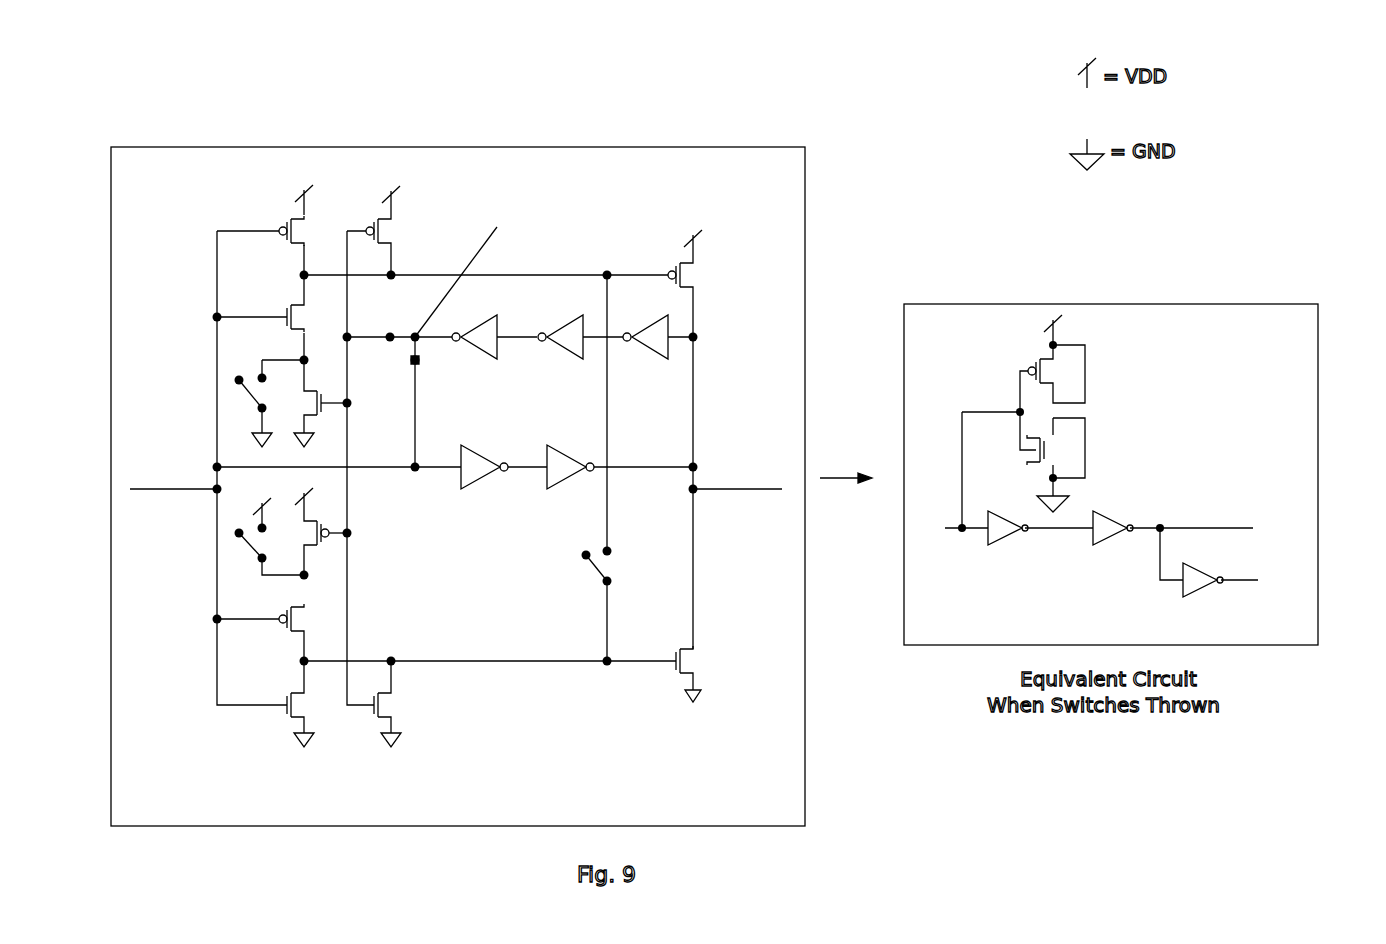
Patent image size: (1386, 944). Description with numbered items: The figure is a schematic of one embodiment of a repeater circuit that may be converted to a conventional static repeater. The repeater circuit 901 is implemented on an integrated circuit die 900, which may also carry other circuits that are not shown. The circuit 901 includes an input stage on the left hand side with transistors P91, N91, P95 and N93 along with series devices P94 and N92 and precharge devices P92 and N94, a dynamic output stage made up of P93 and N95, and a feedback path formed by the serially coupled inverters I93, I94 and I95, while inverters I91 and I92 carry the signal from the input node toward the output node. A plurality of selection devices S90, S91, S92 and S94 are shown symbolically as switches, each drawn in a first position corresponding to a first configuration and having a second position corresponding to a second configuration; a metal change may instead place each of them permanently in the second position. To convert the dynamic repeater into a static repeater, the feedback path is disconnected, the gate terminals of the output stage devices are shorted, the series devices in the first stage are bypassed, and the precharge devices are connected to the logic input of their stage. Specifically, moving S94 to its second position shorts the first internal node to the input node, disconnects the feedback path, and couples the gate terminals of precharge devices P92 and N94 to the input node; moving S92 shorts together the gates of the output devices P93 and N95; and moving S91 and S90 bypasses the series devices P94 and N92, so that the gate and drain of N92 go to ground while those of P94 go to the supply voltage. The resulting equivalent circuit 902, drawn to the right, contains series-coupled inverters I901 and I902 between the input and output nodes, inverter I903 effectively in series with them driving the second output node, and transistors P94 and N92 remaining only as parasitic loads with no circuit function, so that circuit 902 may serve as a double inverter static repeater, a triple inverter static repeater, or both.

The integrated circuit die 900 is at (557, 147).
The repeater circuit 901 is at (648, 208).
The equivalent circuit 902 is at (1220, 371).
The transistor P91 is at (279, 215).
The precharge device P92 is at (397, 216).
The output stage device P93 is at (700, 260).
The series device P94 is at (674, 448).
The transistor P95 is at (304, 619).
The transistor N91 is at (274, 310).
The series device N92 is at (662, 431).
The transistor N93 is at (279, 698).
The precharge device N94 is at (405, 705).
The output stage device N95 is at (705, 661).
The selection device S90 is at (242, 399).
The selection device S91 is at (248, 538).
The selection device S92 is at (583, 575).
The selection device S94 is at (394, 364).
The inverter I91 is at (504, 478).
The inverter I92 is at (620, 480).
The inverter I93 is at (645, 330).
The inverter I94 is at (560, 330).
The inverter I95 is at (474, 330).
The inverter I901 is at (1006, 542).
The inverter I902 is at (1113, 541).
The inverter I903 is at (1210, 593).